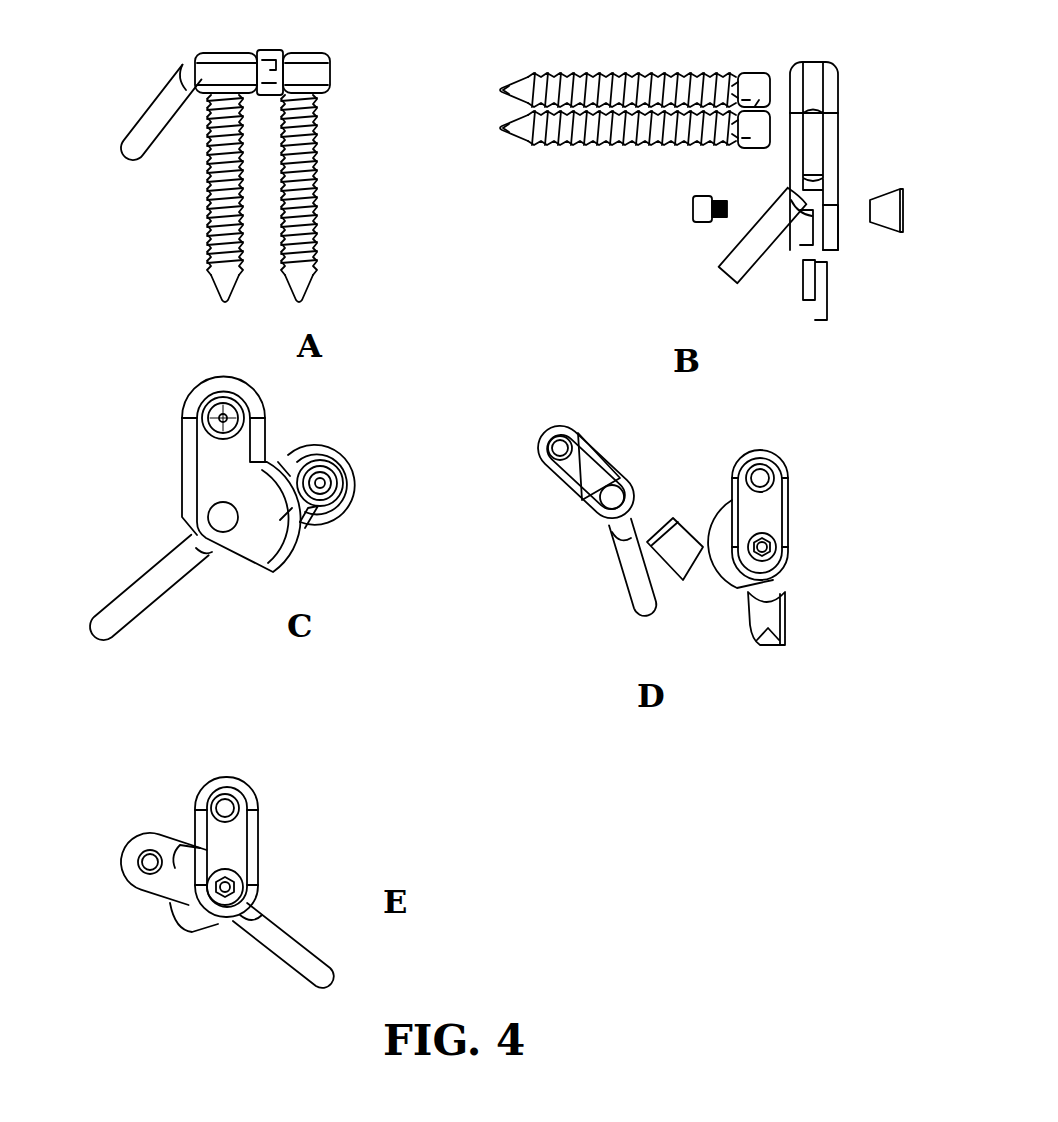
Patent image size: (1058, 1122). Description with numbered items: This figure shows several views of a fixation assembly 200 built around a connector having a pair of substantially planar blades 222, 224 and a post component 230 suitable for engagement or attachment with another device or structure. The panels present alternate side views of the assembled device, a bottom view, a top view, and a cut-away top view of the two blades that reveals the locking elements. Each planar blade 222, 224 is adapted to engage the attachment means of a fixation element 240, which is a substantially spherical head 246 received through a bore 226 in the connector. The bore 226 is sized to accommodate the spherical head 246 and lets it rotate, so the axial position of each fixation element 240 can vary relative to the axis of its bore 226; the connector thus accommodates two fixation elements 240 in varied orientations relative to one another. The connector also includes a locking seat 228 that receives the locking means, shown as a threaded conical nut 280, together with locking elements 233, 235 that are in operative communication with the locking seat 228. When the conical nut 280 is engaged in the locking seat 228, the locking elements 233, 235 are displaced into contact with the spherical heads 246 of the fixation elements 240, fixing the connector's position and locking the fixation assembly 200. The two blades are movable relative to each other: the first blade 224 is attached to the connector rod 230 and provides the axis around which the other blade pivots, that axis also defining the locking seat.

The fixation assembly 200 is at (154, 216).
The fixation element 240 is at (586, 108).
The spherical head 246 is at (746, 78).
The conical nut 280 is at (894, 190).
The locking seat 228 is at (848, 206).
The post component 230 is at (712, 273).
The planar blade 222 is at (201, 489).
The planar blade 224 is at (344, 429).
The bore 226 is at (208, 418).
The locking element 233 is at (312, 512).
The locking element 235 is at (772, 639).